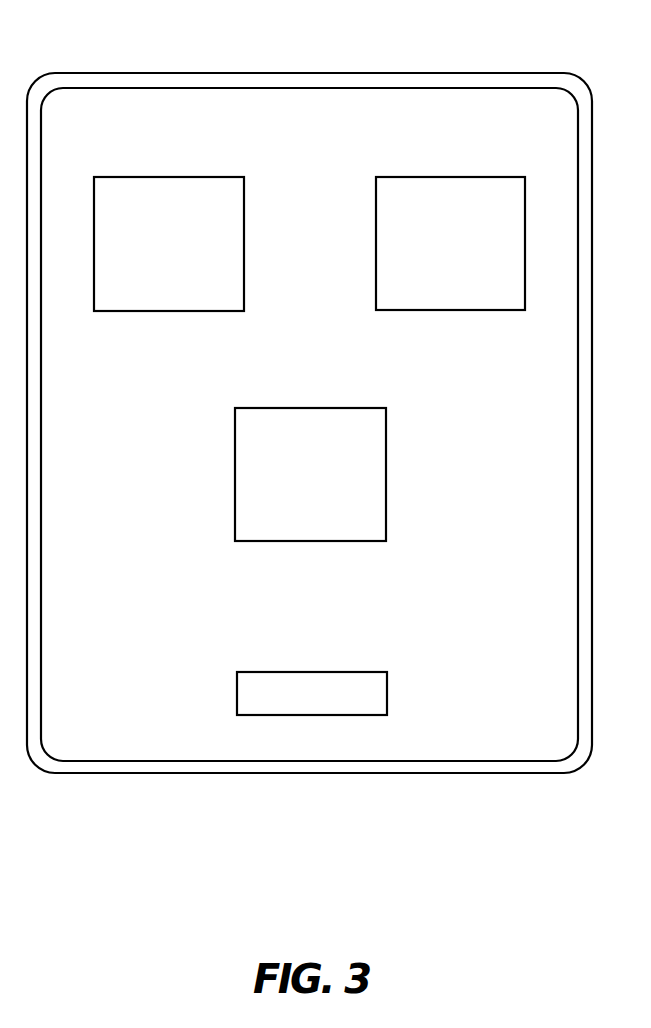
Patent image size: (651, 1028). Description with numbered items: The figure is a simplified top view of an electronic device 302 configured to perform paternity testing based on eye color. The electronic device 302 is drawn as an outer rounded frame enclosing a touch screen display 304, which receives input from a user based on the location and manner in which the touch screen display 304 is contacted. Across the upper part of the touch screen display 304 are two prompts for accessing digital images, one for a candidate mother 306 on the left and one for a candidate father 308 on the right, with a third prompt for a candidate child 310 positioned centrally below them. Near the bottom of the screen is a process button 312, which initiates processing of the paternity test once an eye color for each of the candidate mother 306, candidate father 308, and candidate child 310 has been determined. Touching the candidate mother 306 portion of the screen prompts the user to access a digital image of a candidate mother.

The electronic device 302 is at (177, 73).
The touch screen display 304 is at (425, 115).
The candidate mother 306 is at (195, 180).
The candidate father 308 is at (450, 182).
The candidate child 310 is at (360, 407).
The process button 312 is at (262, 678).